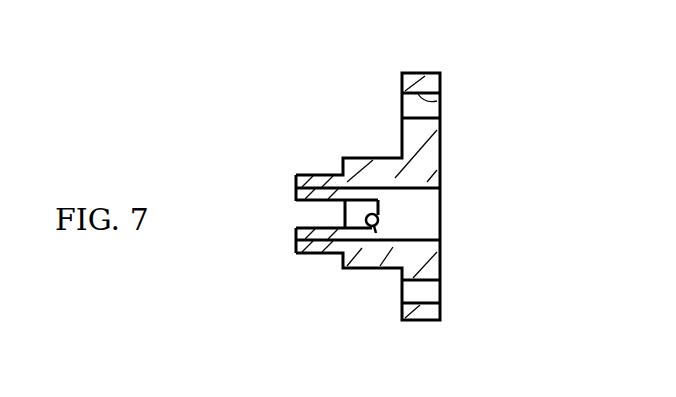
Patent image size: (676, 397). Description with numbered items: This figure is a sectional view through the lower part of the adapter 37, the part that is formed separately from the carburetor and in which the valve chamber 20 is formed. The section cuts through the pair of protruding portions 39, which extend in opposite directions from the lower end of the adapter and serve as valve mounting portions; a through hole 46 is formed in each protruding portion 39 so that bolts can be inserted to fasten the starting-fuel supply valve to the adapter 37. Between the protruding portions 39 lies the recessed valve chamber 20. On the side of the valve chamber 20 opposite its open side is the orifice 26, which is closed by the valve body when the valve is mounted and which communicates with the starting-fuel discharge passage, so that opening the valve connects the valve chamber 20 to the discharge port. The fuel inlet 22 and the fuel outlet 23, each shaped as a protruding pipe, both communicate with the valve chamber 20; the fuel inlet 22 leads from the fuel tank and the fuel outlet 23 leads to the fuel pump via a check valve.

The valve chamber 20 is at (416, 213).
The fuel inlet 22 is at (294, 192).
The fuel outlet 23 is at (293, 236).
The orifice 26 is at (371, 227).
The adapter 37 is at (446, 165).
The protruding portion 39 is at (438, 74).
The through hole 46 is at (437, 105).